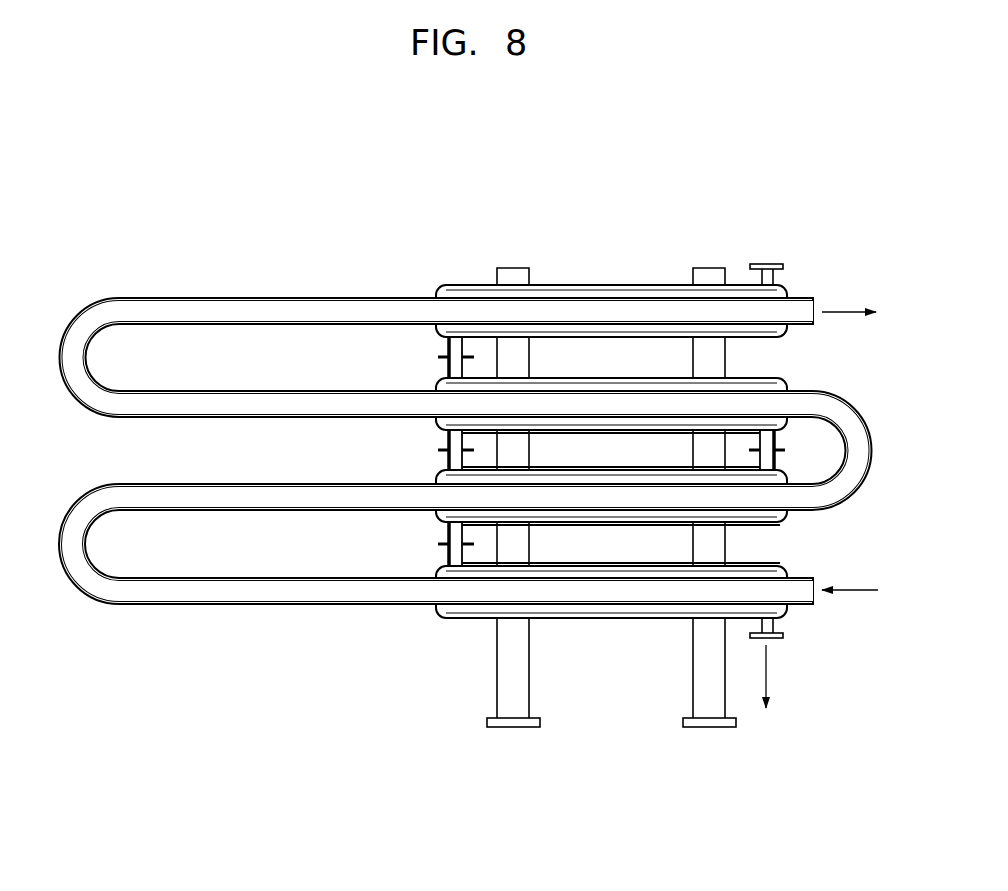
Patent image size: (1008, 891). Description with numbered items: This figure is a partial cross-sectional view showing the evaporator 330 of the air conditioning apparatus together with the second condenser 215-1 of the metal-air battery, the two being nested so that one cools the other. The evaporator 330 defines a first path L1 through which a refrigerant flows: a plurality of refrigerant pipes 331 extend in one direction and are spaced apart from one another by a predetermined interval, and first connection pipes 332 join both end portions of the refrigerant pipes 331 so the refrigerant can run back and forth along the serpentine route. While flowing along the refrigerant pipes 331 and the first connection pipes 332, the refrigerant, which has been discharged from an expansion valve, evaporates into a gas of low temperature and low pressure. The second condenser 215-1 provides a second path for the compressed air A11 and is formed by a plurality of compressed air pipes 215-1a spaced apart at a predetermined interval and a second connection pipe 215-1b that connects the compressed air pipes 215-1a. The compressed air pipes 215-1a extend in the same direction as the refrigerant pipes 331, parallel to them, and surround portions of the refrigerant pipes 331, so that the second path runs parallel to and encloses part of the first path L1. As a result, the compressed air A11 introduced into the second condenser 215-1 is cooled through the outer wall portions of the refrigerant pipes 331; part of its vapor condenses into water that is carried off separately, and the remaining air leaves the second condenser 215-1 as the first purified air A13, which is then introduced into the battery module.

The evaporator 330 is at (457, 378).
The refrigerant pipes 331 is at (248, 296).
The first connection pipes 332 is at (86, 303).
The second condenser 215-1 is at (611, 490).
The compressed air pipes 215-1a is at (603, 283).
The second connection pipe 215-1b is at (468, 355).
The compressed air A11 is at (766, 252).
The first purified air A13 is at (767, 691).
The first path L1 is at (850, 575).